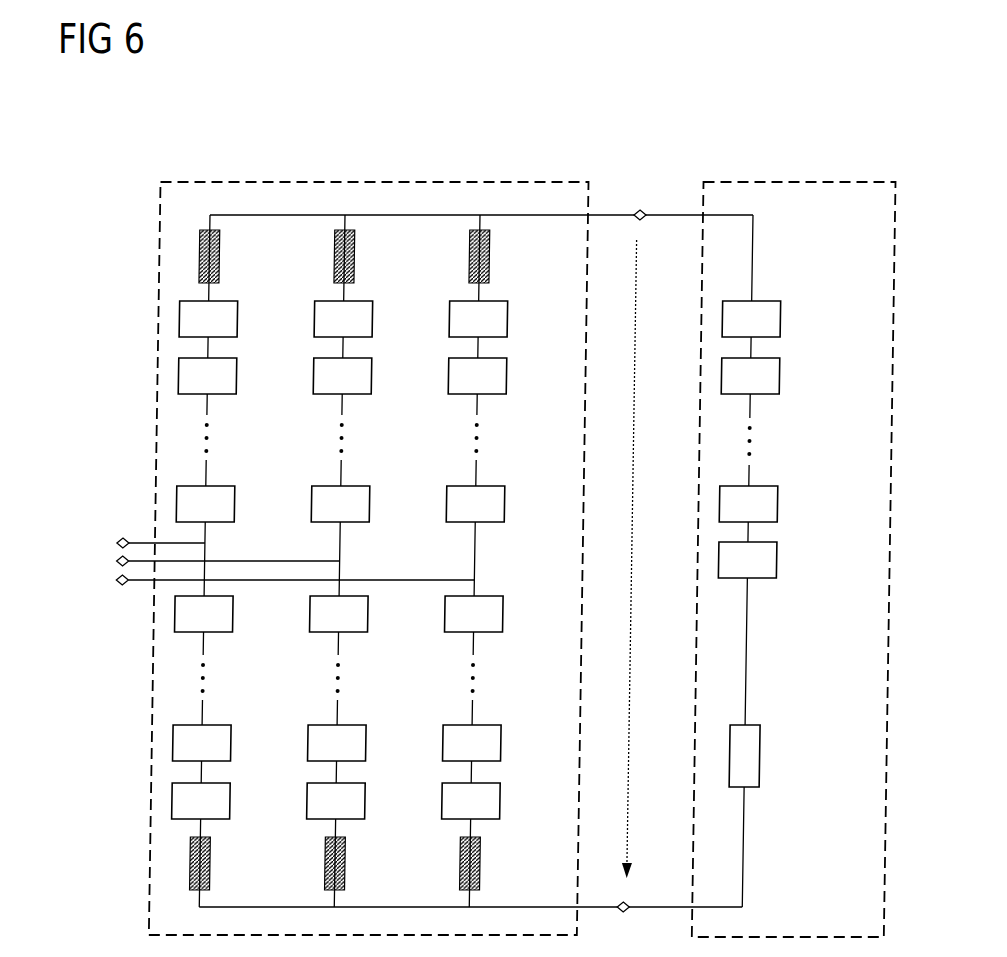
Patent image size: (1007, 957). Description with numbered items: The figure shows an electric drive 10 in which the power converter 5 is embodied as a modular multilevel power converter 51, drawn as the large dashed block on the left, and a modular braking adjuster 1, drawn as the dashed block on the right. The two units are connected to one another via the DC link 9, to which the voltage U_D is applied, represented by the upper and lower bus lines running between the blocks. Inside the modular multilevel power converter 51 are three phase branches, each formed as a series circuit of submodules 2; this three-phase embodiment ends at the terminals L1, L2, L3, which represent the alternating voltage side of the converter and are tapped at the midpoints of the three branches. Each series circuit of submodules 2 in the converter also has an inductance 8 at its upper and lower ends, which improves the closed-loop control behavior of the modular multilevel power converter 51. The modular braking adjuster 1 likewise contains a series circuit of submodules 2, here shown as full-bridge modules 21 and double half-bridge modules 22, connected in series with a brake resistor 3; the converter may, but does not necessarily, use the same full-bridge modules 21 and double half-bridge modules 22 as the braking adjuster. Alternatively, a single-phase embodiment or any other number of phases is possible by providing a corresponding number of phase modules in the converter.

The electric drive 10 is at (298, 99).
The power converter 5 is at (369, 517).
The modular multilevel power converter 51 is at (401, 181).
The modular braking adjuster 1 is at (808, 181).
The submodule 2 is at (551, 804).
The full-bridge module 21 is at (782, 318).
The double half-bridge module 22 is at (782, 503).
The brake resistor 3 is at (768, 752).
The inductance 8 is at (220, 254).
The DC link 9 is at (643, 180).
The terminal L1 is at (122, 543).
The terminal L2 is at (122, 561).
The terminal L3 is at (122, 580).